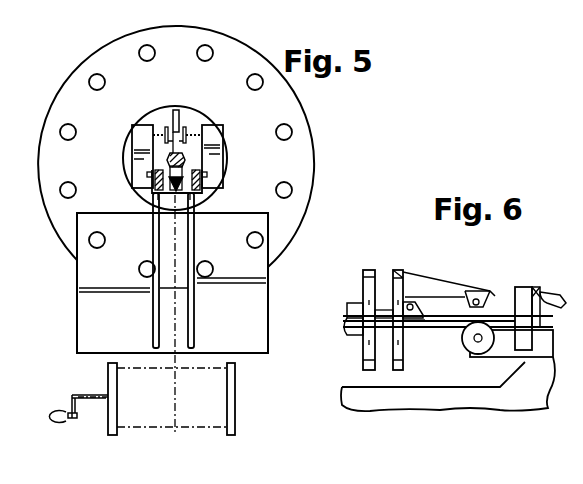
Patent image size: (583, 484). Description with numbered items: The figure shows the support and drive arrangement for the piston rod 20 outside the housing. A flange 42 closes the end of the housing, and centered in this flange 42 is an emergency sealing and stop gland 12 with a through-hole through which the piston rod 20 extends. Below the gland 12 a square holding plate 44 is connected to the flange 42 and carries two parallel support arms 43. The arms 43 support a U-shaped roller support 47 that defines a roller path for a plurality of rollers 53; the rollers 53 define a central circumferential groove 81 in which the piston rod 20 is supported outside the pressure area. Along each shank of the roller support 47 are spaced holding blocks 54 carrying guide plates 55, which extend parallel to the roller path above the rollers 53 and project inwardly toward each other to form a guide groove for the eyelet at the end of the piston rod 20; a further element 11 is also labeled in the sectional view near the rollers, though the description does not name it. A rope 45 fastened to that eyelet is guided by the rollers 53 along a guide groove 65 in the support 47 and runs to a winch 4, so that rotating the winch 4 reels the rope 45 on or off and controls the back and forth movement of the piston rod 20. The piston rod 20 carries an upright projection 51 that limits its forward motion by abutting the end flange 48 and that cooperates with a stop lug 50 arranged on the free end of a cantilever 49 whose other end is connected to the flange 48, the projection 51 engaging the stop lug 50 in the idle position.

In FIG. 5, the flange 42 is at (103, 58).
In FIG. 5, the holding blocks 54 is at (143, 127).
In FIG. 5, the guide plates 55 is at (165, 128).
In FIG. 5, the cantilever 49 is at (179, 113).
In FIG. 6, the cantilever 49 is at (438, 285).
In FIG. 5, the pin 11 is at (184, 150).
In FIG. 5, the central circumferential groove 81 is at (183, 157).
In FIG. 5, the rollers 53 is at (183, 166).
In FIG. 5, the U-shaped roller support 47 is at (134, 192).
In FIG. 5, the guide groove 65 is at (162, 195).
In FIG. 5, the support arms 43 is at (153, 303).
In FIG. 6, the support arms 43 is at (358, 392).
In FIG. 5, the holding plate 44 is at (257, 287).
In FIG. 5, the rope 45 is at (173, 365).
In FIG. 5, the winch 4 is at (230, 398).
In FIG. 6, the emergency sealing and stop gland 12 is at (355, 300).
In FIG. 6, the end flange 48 is at (402, 270).
In FIG. 6, the stop lug 50 is at (477, 290).
In FIG. 6, the upright projection 51 is at (410, 325).
In FIG. 6, the piston rod 20 is at (445, 323).